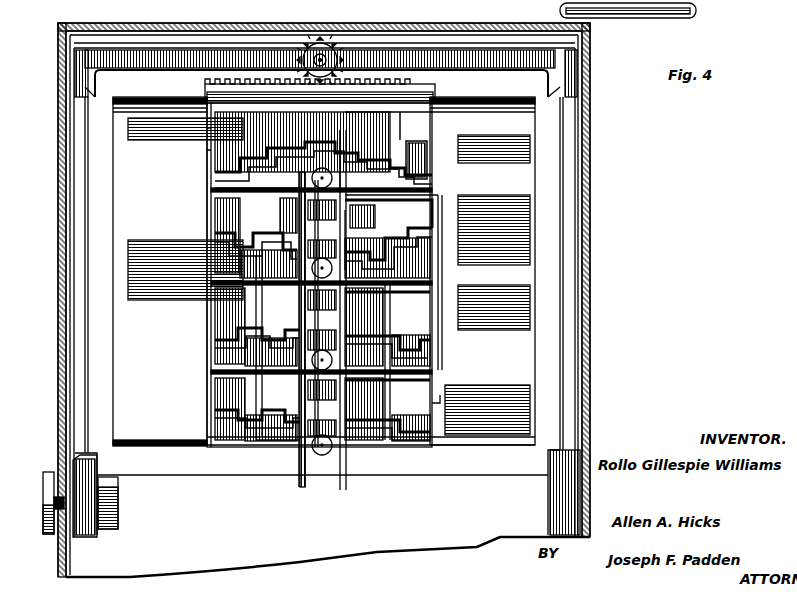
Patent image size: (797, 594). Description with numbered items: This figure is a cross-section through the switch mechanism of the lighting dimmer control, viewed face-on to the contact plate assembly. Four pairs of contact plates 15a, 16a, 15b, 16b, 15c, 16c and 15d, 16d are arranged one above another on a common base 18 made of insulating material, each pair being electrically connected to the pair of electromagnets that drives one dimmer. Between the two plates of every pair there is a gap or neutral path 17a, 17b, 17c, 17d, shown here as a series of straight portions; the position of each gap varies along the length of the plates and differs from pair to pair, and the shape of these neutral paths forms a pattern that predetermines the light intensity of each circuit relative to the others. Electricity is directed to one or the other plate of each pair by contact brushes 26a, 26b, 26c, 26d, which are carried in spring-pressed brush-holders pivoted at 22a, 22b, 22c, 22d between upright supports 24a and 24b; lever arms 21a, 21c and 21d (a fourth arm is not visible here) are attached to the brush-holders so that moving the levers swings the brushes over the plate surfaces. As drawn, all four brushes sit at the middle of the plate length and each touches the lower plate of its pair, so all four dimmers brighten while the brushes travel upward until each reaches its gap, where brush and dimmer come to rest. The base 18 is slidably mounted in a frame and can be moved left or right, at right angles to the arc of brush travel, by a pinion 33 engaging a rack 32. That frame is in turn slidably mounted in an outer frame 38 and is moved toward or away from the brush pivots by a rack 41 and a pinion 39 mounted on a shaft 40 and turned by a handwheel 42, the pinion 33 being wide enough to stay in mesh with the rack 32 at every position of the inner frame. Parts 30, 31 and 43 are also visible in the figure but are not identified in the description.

The contact plate 15a is at (420, 126).
The contact plate 15b is at (440, 200).
The contact plate 15c is at (420, 295).
The contact plate 15d is at (425, 378).
The contact plate 16a is at (420, 165).
The contact plate 16b is at (425, 256).
The contact plate 16c is at (420, 352).
The contact plate 16d is at (410, 436).
The gap 17a is at (215, 172).
The gap 17b is at (215, 231).
The gap 17c is at (215, 340).
The gap 17d is at (215, 409).
The base 18 is at (207, 142).
The lever arm 21a is at (444, 215).
The lever arm 21c is at (300, 195).
The lever arm 21d is at (262, 300).
The pivot 22a is at (348, 160).
The pivot 22b is at (355, 258).
The pivot 22c is at (387, 350).
The pivot 22d is at (348, 470).
The upright support 24a is at (343, 495).
The upright support 24b is at (440, 403).
The contact brush 26a is at (324, 190).
The contact brush 26b is at (310, 276).
The contact brush 26c is at (310, 366).
The contact brush 26d is at (322, 456).
The panel bottom rail 30 is at (137, 440).
The insulating panel 31 is at (522, 108).
The rack 32 is at (432, 93).
The pinion 33 is at (328, 42).
The frame 38 is at (80, 240).
The pinion 39 is at (112, 530).
The shaft 40 is at (56, 530).
The rack 41 is at (118, 483).
The handwheel 42 is at (48, 472).
The cover strip 43 is at (698, 12).